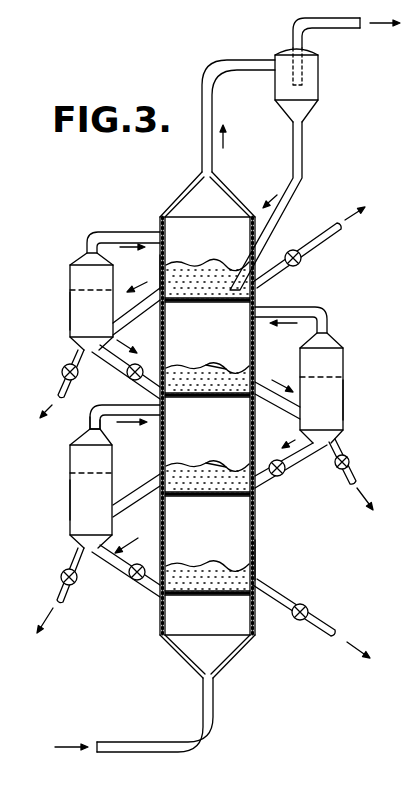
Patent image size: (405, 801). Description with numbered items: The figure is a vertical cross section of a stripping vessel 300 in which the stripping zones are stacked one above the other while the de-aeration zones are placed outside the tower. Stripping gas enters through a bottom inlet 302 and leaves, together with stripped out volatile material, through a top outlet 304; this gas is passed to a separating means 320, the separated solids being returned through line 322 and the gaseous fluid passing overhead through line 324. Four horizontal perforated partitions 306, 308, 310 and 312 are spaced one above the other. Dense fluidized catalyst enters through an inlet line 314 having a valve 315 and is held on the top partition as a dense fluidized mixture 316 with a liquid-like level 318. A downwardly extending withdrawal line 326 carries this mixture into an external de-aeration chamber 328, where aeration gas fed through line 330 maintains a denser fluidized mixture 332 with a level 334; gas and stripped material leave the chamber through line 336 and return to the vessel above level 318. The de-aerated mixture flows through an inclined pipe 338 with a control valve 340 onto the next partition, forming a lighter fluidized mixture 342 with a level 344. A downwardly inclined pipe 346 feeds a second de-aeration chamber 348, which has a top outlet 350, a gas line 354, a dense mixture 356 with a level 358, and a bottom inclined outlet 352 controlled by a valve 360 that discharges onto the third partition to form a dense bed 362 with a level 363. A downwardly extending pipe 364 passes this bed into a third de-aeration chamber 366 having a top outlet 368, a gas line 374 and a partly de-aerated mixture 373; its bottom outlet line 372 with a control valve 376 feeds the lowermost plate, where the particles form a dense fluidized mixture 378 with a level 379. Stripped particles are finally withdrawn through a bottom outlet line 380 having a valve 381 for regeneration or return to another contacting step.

The stripping vessel 300 is at (178, 190).
The bottom inlet 302 is at (162, 742).
The top outlet 304 is at (205, 92).
The top perforated partition 306 is at (177, 303).
The perforated partition 308 is at (177, 398).
The perforated partition 310 is at (180, 498).
The lowermost perforated plate 312 is at (180, 598).
The inlet line 314 is at (336, 232).
The valve 315 is at (302, 259).
The dense fluidized mixture 316 is at (163, 275).
The level 318 is at (205, 266).
The separating means 320 is at (310, 76).
The line 322 is at (302, 147).
The line 324 is at (297, 26).
The withdrawal line 326 is at (145, 308).
The de-aeration chamber 328 is at (70, 323).
The line 330 is at (62, 373).
The dense fluidized mixture 332 is at (78, 305).
The level 334 is at (80, 288).
The line 336 is at (138, 226).
The inclined pipe 338 is at (130, 380).
The control valve 340 is at (130, 406).
The fluidized mixture 342 is at (180, 372).
The level 344 is at (228, 370).
The downwardly inclined pipe 346 is at (257, 383).
The de-aeration chamber 348 is at (345, 410).
The top outlet 350 is at (318, 315).
The bottom inclined outlet 352 is at (300, 459).
The line 354 is at (340, 445).
The dense mixture 356 is at (328, 400).
The level 358 is at (323, 376).
The control valve 360 is at (280, 485).
The dense bed 362 is at (178, 471).
The level 363 is at (227, 464).
The downwardly extending pipe 364 is at (142, 502).
The de-aeration chamber 366 is at (70, 460).
The top outlet 368 is at (85, 418).
The bottom outlet line 372 is at (113, 558).
The partly de-aerated mixture 373 is at (70, 492).
The line 374 is at (82, 563).
The control valve 376 is at (133, 581).
The dense fluidized mixture 378 is at (192, 567).
The level 379 is at (256, 558).
The bottom outlet line 380 is at (278, 600).
The valve 381 is at (296, 624).